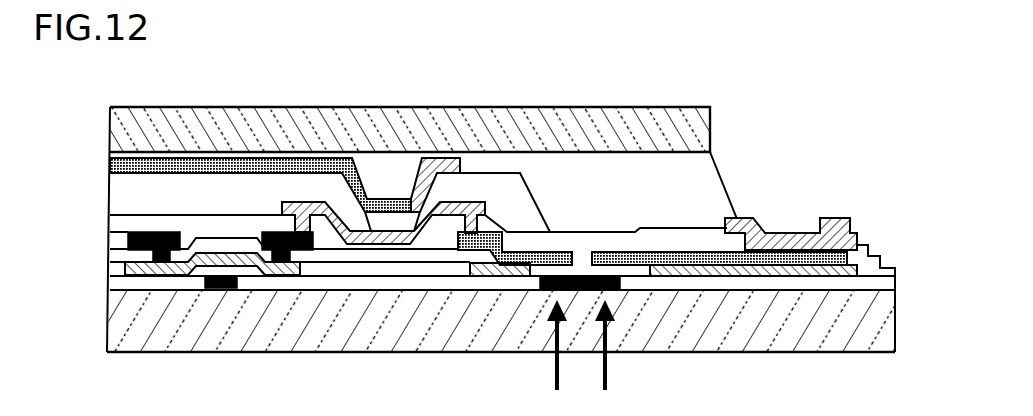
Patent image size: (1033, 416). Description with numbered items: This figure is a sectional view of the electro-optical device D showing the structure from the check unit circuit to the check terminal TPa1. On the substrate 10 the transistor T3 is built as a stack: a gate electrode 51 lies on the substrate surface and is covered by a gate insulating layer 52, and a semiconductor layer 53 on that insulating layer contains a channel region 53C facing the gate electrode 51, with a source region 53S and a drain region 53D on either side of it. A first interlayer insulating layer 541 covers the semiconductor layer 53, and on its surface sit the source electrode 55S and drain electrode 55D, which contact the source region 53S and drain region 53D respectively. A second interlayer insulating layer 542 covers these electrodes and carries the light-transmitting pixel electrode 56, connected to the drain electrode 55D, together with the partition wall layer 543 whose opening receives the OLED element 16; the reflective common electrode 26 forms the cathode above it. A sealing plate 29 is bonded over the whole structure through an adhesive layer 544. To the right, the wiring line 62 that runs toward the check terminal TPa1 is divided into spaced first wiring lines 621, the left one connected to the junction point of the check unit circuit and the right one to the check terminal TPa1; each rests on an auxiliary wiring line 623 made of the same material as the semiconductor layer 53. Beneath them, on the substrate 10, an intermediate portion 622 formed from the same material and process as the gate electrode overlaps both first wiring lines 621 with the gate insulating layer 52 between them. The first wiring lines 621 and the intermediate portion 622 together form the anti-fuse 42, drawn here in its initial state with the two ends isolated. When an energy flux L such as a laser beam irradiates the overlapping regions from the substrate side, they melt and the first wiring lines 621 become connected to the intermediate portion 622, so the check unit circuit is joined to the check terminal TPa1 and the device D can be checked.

The substrate 10 is at (110, 320).
The OLED element 16 is at (380, 220).
The common electrode 26 is at (418, 170).
The sealing plate 29 is at (650, 107).
The anti-fuse 42 is at (642, 288).
The gate electrode 51 is at (220, 289).
The gate insulating layer 52 is at (110, 284).
The semiconductor layer 53 is at (118, 266).
The source region 53S is at (148, 268).
The channel region 53C is at (212, 256).
The drain region 53D is at (284, 274).
The first interlayer insulating layer 541 is at (112, 252).
The second interlayer insulating layer 542 is at (110, 216).
The partition wall layer 543 is at (110, 174).
The adhesive layer 544 is at (718, 168).
The source electrode 55S is at (126, 236).
The drain electrode 55D is at (305, 252).
The pixel electrode 56 is at (468, 204).
The wiring line 62 is at (739, 290).
The first wiring line 621 is at (692, 250).
The intermediate portion 622 is at (620, 293).
The auxiliary wiring line 623 is at (477, 278).
The electro-optical device D is at (740, 115).
The energy flux L is at (581, 358).
The transistor T3 is at (252, 305).
The check terminal TPa1 is at (785, 232).